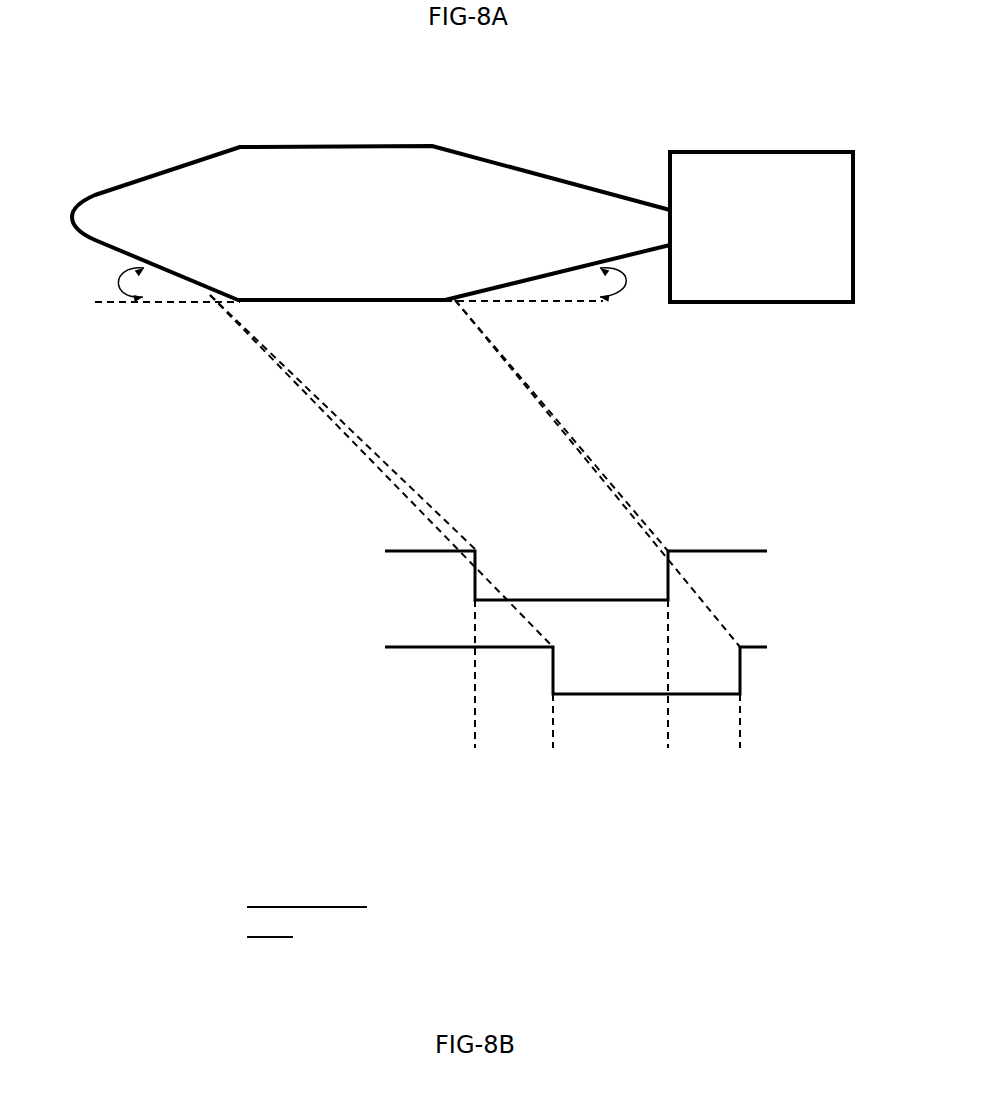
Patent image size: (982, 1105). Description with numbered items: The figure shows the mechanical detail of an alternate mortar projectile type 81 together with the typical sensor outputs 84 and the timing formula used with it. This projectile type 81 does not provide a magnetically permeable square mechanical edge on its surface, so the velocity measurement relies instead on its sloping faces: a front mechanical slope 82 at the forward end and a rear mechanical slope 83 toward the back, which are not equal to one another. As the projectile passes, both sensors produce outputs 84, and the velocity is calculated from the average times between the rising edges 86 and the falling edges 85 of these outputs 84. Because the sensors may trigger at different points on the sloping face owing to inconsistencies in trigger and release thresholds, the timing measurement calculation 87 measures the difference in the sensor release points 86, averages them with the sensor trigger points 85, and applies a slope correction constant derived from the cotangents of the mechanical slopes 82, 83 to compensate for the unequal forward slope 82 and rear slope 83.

In FIG. 8A, the projectile type 81 is at (160, 145).
In FIG. 8A, the front mechanical slope 82 is at (88, 305).
In FIG. 8A, the rear mechanical slope 83 is at (653, 303).
In FIG. 8A, the sensor outputs 84 is at (167, 537).
In FIG. 8A, the falling edges 85 is at (524, 747).
In FIG. 8A, the rising edges 86 is at (719, 747).
In FIG. 8B, the timing measurement calculation 87 is at (165, 848).